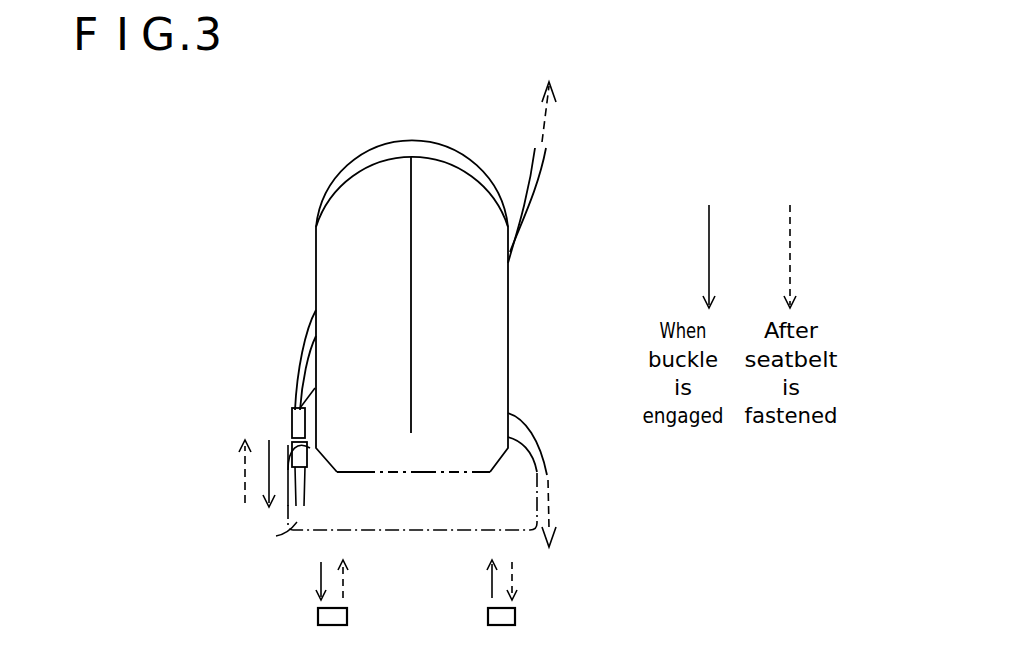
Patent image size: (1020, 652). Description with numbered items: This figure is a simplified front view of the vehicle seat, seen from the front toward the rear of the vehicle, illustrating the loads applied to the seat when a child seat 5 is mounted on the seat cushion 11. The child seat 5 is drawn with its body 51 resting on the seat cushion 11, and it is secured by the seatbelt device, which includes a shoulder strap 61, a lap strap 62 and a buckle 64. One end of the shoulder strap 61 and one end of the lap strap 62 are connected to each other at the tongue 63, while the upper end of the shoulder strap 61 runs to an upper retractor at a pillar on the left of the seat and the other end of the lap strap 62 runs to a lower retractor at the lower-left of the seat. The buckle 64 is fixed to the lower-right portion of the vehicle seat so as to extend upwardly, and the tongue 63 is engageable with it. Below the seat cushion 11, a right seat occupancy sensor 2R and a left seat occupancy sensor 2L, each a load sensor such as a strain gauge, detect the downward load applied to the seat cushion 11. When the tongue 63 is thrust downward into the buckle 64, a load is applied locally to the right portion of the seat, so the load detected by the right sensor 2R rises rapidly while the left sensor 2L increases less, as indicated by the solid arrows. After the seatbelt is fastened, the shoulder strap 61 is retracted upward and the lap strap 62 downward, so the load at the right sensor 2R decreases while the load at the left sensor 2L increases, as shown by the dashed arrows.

The child seat 5 is at (320, 251).
The seat body 51 is at (508, 328).
The shoulder strap 61 is at (537, 192).
The lap strap 62 is at (530, 432).
The tongue 63 is at (297, 420).
The buckle 64 is at (293, 440).
The seat cushion 11 is at (282, 533).
The right seat occupancy sensor 2R is at (318, 615).
The left seat occupancy sensor 2L is at (515, 613).